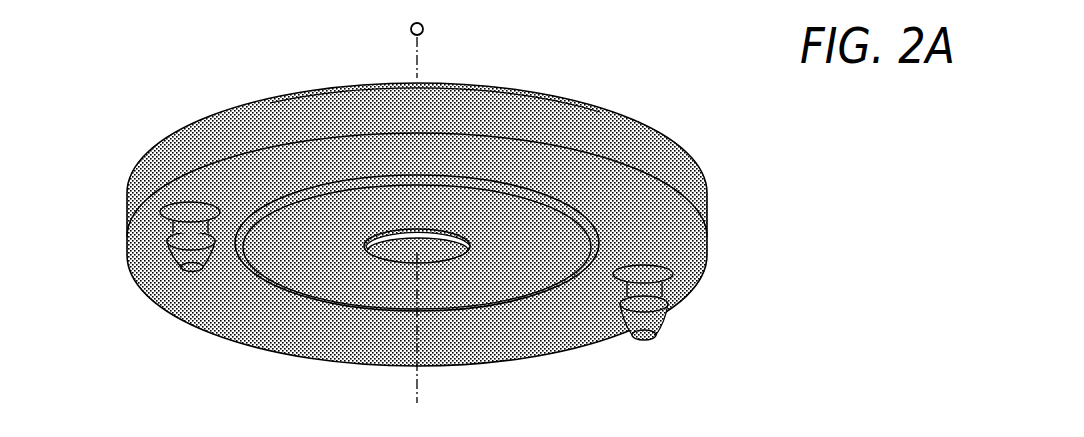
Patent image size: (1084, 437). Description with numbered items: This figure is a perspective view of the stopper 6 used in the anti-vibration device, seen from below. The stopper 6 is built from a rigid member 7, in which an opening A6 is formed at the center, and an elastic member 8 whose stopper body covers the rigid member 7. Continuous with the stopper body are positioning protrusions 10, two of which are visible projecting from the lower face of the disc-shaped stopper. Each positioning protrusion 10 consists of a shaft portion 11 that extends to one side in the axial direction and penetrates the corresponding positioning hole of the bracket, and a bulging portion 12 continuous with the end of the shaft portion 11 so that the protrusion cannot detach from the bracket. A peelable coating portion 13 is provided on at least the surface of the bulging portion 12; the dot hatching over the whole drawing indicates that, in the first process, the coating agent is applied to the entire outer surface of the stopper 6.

The coating portion 13 is at (620, 140).
The positioning protrusion 10 is at (391, 278).
The shaft portion 11 is at (166, 229).
The bulging portion 12 is at (165, 259).
The stopper 6 is at (417, 279).
The rigid member 7 is at (513, 273).
The elastic member 8 is at (570, 318).
The opening A6 is at (378, 262).